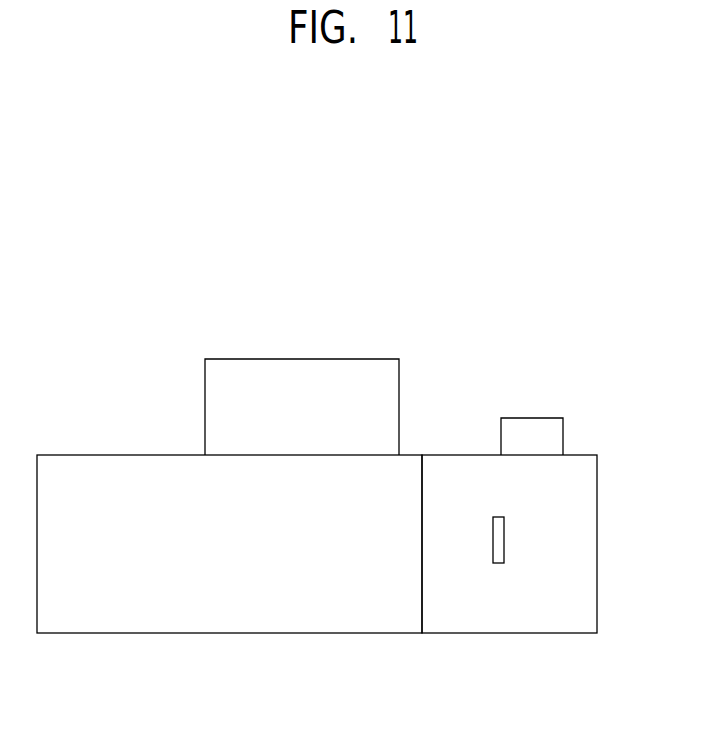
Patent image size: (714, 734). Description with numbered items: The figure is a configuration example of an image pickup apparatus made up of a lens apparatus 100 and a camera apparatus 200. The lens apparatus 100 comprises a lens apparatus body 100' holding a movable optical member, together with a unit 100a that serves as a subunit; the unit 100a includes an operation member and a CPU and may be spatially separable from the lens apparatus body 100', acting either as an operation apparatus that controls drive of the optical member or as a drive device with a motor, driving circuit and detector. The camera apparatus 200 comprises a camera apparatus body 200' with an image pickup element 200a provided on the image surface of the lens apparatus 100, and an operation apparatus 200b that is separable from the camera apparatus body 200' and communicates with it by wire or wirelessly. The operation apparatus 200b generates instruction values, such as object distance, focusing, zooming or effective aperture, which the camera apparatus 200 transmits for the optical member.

The lens apparatus 100 is at (202, 279).
The lens apparatus body 100' is at (229, 465).
The unit 100a is at (232, 377).
The camera apparatus 200 is at (560, 312).
The camera apparatus body 200' is at (509, 484).
The operation apparatus 200b is at (531, 428).
The image pickup element 200a is at (500, 535).